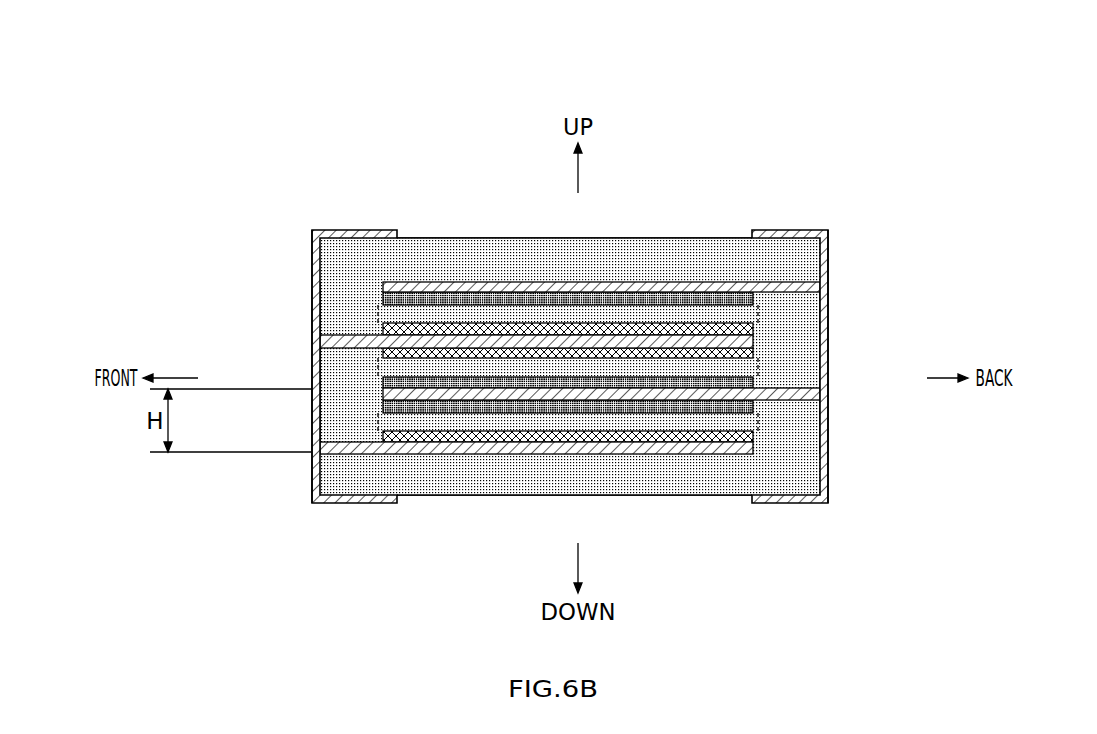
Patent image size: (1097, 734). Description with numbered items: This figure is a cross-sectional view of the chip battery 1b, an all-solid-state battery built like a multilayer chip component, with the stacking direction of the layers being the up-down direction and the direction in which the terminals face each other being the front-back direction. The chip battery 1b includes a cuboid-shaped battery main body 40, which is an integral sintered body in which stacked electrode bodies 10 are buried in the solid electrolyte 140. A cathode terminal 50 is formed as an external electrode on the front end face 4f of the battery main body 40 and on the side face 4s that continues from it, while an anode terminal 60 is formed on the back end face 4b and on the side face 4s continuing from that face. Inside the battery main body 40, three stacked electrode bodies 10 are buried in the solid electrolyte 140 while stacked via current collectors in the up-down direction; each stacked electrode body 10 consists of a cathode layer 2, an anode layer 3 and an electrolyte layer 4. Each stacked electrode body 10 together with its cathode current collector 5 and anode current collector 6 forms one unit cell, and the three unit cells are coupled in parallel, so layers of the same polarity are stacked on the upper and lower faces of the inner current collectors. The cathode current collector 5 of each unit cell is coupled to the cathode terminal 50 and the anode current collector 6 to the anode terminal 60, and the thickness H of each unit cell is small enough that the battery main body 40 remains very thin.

The chip battery 1b is at (456, 133).
The battery main body 40 is at (692, 238).
The solid electrolyte 140 is at (372, 258).
The side face 4s is at (628, 229).
The front end face 4f is at (306, 468).
The back end face 4b is at (830, 489).
The stacked electrode body 10 is at (564, 367).
The cathode layer 2 is at (384, 330).
The anode layer 3 is at (384, 298).
The electrolyte layer 4 is at (382, 318).
The cathode current collector 5 is at (668, 454).
The anode current collector 6 is at (530, 282).
The cathode terminal 50 is at (328, 504).
The anode terminal 60 is at (828, 282).